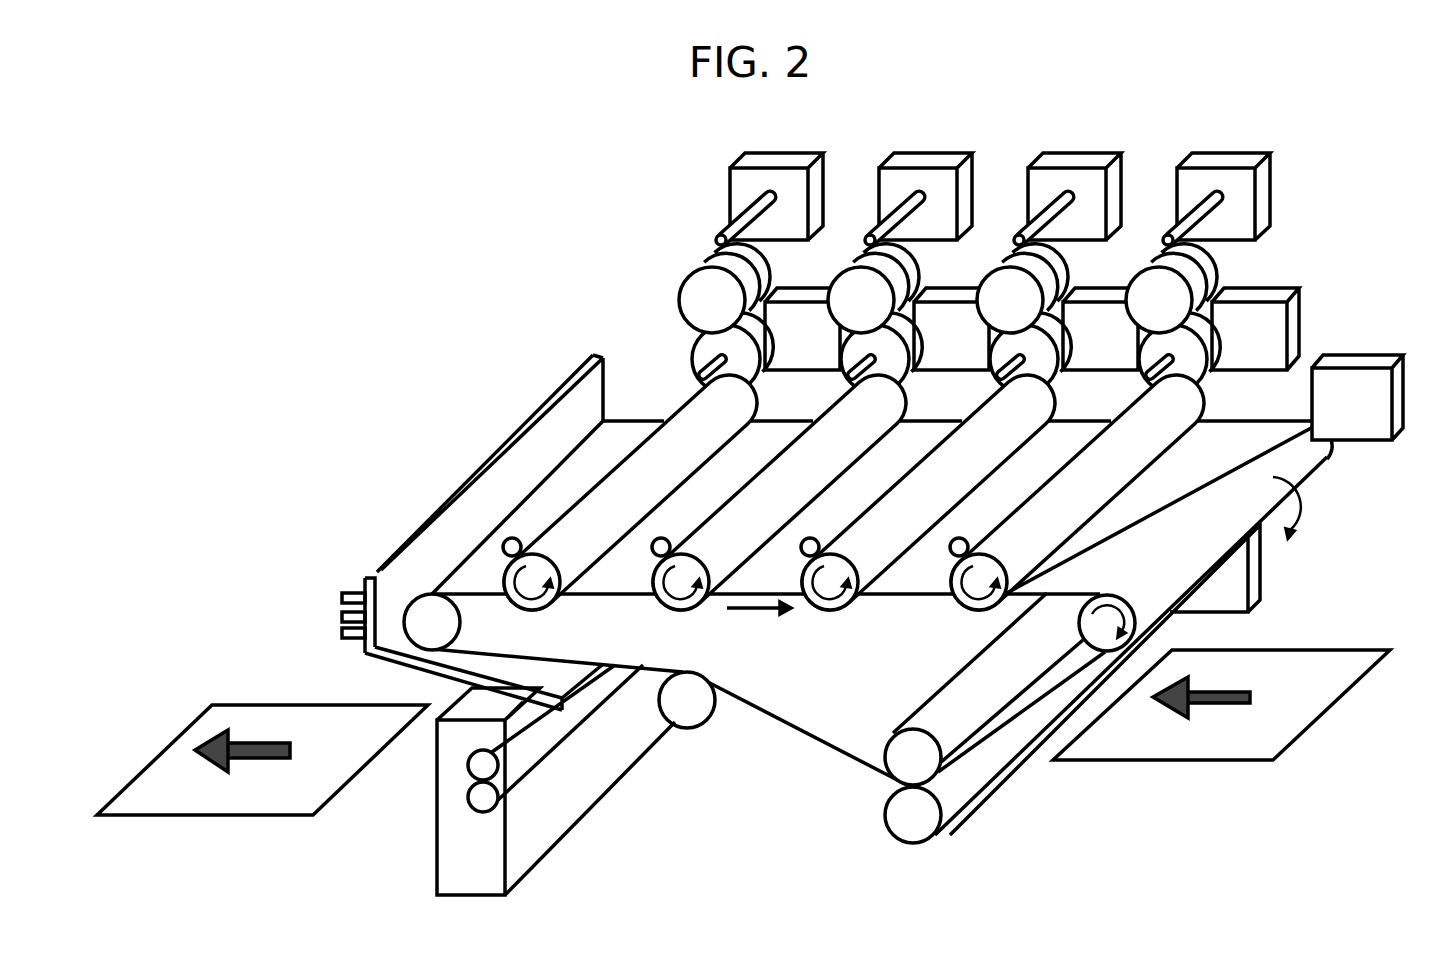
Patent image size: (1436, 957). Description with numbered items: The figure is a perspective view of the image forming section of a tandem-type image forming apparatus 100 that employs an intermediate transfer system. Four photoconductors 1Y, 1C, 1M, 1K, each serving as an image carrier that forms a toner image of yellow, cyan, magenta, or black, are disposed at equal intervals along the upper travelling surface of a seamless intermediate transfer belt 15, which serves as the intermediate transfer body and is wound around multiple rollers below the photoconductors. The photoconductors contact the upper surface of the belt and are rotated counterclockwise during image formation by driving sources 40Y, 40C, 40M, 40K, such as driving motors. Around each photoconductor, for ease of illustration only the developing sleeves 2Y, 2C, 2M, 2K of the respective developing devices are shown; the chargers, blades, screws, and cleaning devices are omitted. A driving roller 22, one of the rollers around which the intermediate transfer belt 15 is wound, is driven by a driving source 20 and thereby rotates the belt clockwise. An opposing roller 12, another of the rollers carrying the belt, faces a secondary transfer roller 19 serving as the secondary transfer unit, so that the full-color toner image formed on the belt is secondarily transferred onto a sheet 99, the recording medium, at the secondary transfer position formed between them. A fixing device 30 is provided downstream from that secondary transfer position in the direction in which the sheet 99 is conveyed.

The image forming apparatus 100 is at (736, 854).
The photoconductor 1Y is at (530, 606).
The photoconductor 1C is at (683, 596).
The photoconductor 1M is at (832, 596).
The photoconductor 1K is at (972, 596).
The developing sleeve 2Y is at (672, 395).
The developing sleeve 2C is at (672, 395).
The developing sleeve 2M is at (928, 470).
The developing sleeve 2K is at (1077, 470).
The driving source 40Y is at (796, 296).
The driving source 40C is at (914, 273).
The driving source 40M is at (1063, 273).
The driving source 40K is at (1212, 273).
The opposing roller 12 is at (888, 752).
The intermediate transfer belt 15 is at (790, 725).
The secondary transfer roller 19 is at (888, 808).
The driving source 20 is at (1358, 360).
The driving roller 22 is at (1123, 602).
The fixing device 30 is at (416, 838).
The sheet 99 is at (225, 808).